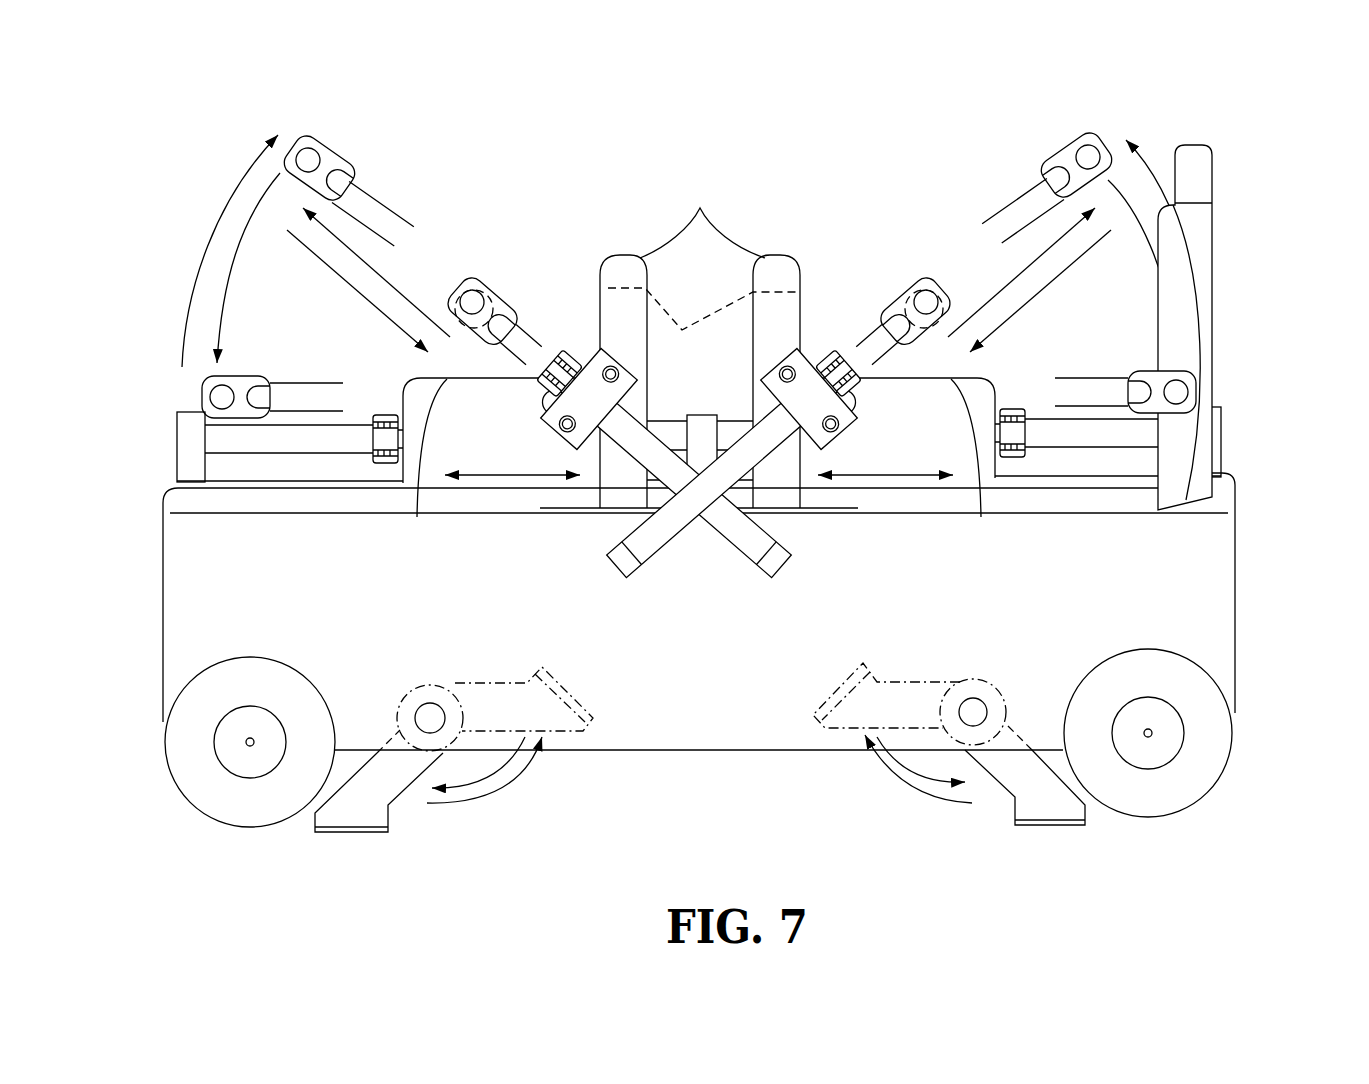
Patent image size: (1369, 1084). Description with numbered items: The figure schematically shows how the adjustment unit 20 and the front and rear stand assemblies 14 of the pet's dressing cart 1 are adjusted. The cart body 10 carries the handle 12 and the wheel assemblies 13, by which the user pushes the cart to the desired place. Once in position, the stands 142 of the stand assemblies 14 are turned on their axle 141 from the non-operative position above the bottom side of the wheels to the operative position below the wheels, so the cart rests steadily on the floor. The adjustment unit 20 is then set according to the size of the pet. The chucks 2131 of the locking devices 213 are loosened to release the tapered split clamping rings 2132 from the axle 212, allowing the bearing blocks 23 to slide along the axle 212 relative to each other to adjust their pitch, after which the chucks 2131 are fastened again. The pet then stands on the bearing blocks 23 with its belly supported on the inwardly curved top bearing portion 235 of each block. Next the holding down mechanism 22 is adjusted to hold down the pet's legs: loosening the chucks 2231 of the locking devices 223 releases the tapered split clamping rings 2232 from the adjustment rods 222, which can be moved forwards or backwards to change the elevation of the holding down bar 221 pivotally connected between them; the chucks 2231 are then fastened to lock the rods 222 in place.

The pet's dressing cart 1 is at (578, 145).
The cart body 10 is at (1262, 568).
The handle 12 is at (1212, 190).
The wheel assemblies 13 is at (160, 793).
The stand assemblies 14 is at (408, 805).
The axle 141 is at (428, 712).
The stands 142 is at (355, 755).
The adjustment unit 20 is at (787, 230).
The axle 212 is at (250, 453).
The locking devices 213 is at (383, 407).
The chuck 2131 is at (367, 442).
The tapered split clamping ring 2132 is at (417, 517).
The holding down mechanism 22 is at (530, 292).
The holding down bar 221 is at (514, 300).
The adjustment rods 222 is at (617, 447).
The locking devices 223 is at (570, 342).
The chuck 2231 is at (487, 296).
The tapered split clamping ring 2232 is at (540, 420).
The bearing blocks 23 is at (700, 345).
The inwardly curved top bearing portion 235 is at (702, 325).